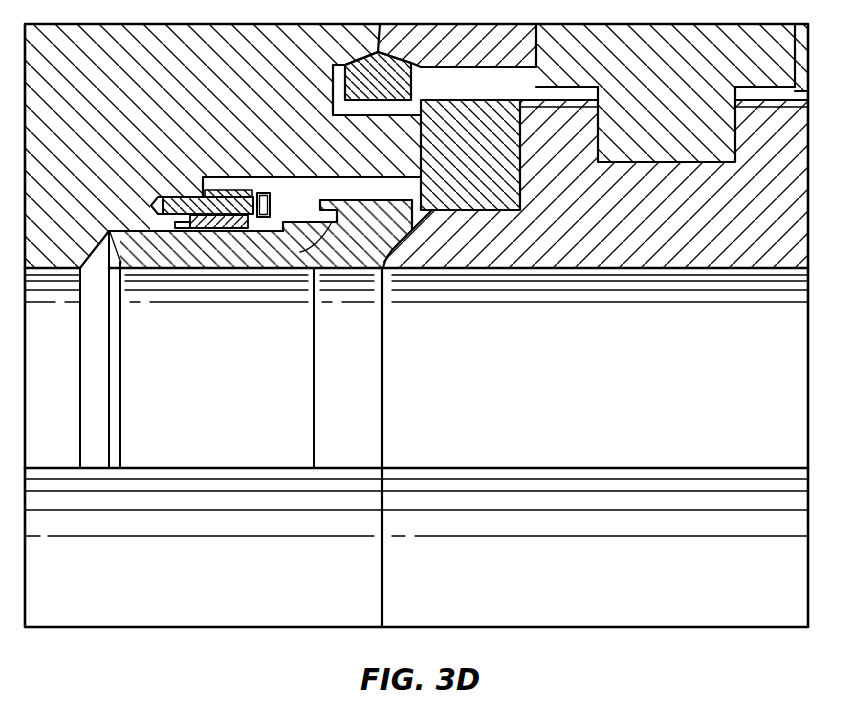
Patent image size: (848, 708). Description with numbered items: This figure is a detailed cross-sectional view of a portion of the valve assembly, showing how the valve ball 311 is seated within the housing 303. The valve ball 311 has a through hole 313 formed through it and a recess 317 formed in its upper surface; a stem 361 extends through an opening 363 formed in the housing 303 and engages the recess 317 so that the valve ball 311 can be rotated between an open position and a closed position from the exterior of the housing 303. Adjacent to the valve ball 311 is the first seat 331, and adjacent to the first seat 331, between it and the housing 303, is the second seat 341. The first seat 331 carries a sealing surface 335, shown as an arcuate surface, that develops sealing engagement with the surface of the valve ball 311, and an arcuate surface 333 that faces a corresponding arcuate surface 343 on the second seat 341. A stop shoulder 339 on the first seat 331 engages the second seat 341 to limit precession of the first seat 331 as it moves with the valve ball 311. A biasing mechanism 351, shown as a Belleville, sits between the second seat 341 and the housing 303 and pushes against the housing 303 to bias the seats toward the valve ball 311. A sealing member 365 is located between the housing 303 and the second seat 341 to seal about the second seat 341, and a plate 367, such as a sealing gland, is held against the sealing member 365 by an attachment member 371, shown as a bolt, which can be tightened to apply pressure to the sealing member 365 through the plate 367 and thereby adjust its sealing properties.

The housing 303 is at (139, 100).
The valve ball 311 is at (693, 208).
The through hole 313 is at (567, 268).
The recess 317 is at (616, 118).
The first seat 331 is at (416, 268).
The arcuate surface 333 is at (346, 250).
The sealing surface 335 is at (362, 267).
The stop shoulder 339 is at (325, 200).
The second seat 341 is at (208, 257).
The arcuate surface 343 is at (305, 252).
The biasing mechanism 351 is at (113, 235).
The stem 361 is at (731, 65).
The opening 363 is at (558, 62).
The sealing member 365 is at (172, 225).
The plate 367 is at (227, 190).
The attachment member 371 is at (262, 192).